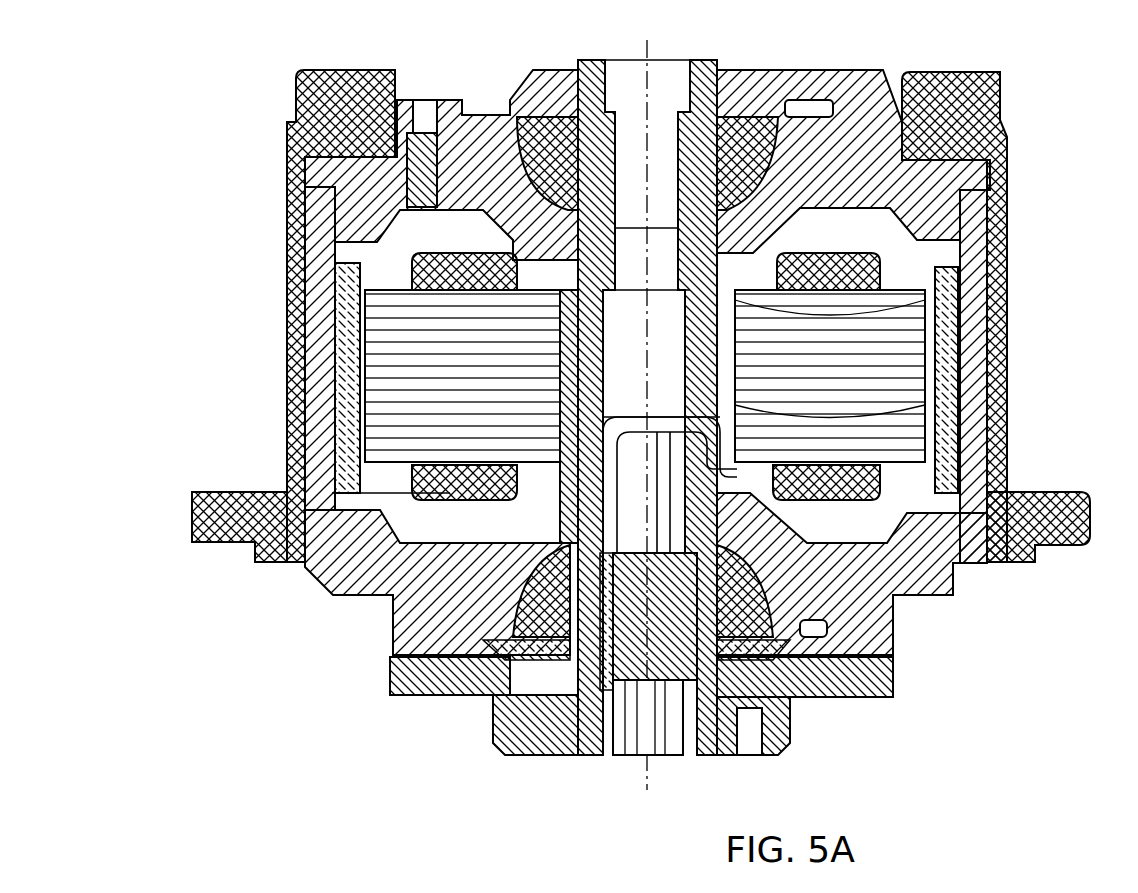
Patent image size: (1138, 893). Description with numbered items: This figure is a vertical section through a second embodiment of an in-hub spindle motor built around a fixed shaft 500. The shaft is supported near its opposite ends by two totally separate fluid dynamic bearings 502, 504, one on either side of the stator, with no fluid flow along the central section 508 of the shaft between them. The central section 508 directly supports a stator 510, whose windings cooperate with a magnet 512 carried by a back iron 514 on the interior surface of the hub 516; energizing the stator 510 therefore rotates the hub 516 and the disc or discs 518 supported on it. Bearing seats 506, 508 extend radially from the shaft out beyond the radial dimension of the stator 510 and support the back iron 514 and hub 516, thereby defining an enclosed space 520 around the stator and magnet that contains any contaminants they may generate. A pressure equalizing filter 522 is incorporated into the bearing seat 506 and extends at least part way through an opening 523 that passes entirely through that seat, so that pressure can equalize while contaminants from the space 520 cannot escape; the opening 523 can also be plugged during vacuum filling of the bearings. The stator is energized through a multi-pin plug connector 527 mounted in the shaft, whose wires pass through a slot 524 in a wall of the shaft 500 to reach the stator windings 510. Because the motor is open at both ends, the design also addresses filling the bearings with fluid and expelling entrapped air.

The fixed shaft 500 is at (718, 66).
The fluid dynamic bearing 502 is at (480, 694).
The fluid dynamic bearing 504 is at (518, 100).
The bearing seat 506 is at (868, 133).
The central section of the shaft 508 is at (948, 300).
The stator 510 is at (882, 390).
The magnet 512 is at (955, 330).
The back iron 514 is at (985, 228).
The hub 516 is at (1008, 142).
The disc 518 is at (155, 428).
The enclosed space 520 is at (930, 215).
The pressure equalizing filter 522 is at (441, 150).
The opening 523 is at (428, 128).
The slot 524 is at (883, 420).
The multi-pin plug connector 527 is at (627, 682).